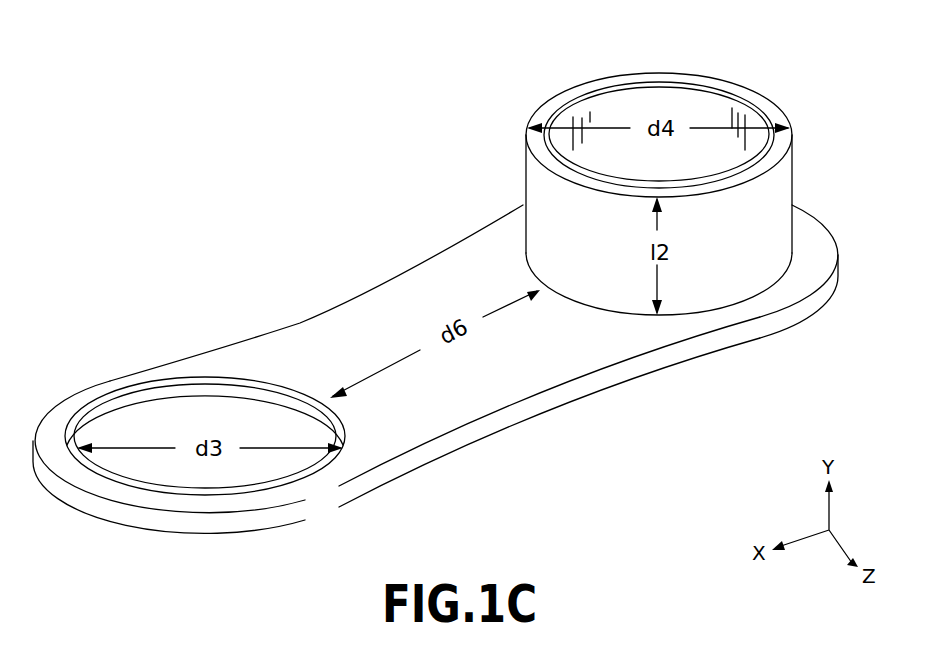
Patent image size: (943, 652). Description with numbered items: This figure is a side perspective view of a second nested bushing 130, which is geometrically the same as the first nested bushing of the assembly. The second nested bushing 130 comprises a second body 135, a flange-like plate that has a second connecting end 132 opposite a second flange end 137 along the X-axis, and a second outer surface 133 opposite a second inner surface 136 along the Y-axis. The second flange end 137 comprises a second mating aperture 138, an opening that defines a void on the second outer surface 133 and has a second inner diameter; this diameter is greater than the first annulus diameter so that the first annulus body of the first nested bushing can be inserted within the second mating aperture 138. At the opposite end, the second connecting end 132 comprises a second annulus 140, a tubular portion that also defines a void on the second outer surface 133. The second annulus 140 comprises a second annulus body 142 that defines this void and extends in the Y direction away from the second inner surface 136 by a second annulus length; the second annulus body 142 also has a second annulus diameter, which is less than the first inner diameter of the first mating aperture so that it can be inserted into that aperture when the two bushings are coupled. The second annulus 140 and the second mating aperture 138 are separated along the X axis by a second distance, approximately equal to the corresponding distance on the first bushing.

The second nested bushing 130 is at (435, 315).
The second connecting end 132 is at (808, 278).
The second outer surface 133 is at (458, 448).
The second body 135 is at (363, 313).
The second inner surface 136 is at (493, 391).
The second flange end 137 is at (92, 383).
The second mating aperture 138 is at (203, 487).
The second annulus 140 is at (620, 110).
The second annulus body 142 is at (553, 220).